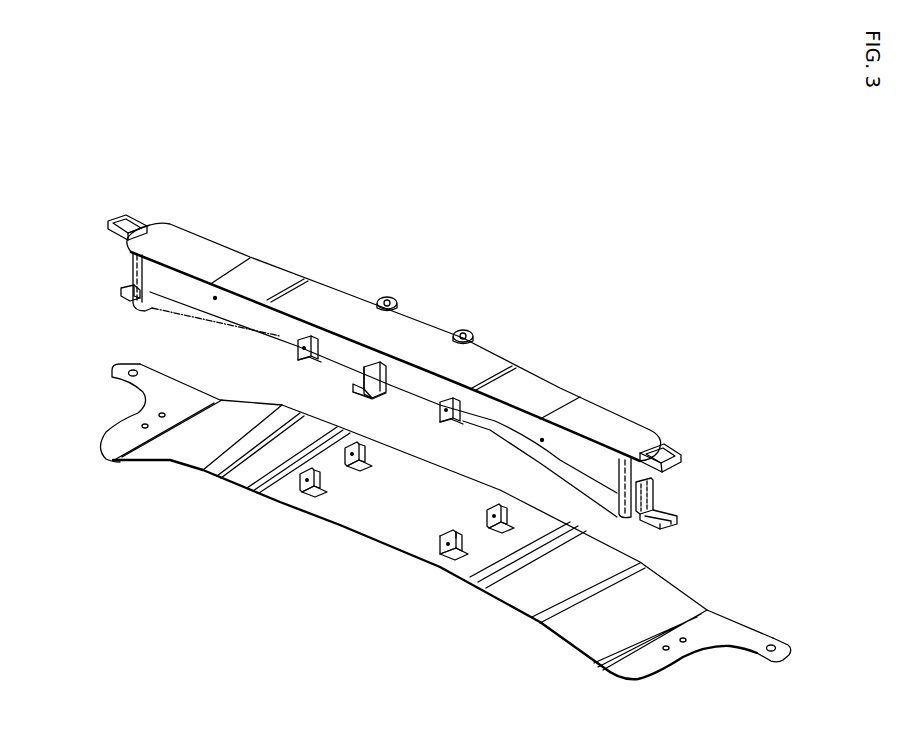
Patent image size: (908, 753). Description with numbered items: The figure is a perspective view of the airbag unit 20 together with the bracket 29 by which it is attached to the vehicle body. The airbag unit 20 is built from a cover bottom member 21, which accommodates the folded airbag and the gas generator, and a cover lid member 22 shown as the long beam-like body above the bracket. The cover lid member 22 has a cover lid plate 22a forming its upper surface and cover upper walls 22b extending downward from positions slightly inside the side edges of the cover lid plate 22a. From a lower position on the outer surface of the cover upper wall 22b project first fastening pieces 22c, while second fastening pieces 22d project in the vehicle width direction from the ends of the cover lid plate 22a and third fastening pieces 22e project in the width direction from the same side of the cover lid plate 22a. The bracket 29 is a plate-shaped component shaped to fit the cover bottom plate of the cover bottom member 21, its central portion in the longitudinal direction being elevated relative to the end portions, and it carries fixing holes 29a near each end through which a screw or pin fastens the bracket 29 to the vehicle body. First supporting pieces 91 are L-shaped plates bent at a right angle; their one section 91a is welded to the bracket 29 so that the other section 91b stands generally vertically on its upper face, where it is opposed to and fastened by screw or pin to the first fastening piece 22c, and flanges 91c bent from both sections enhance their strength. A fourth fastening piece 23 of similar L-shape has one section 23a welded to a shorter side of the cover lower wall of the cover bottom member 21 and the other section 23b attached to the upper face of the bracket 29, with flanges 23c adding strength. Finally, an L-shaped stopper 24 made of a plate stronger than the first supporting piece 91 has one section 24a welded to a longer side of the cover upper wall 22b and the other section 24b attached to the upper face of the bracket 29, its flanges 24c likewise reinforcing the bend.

The airbag unit 20 is at (466, 265).
The cover bottom member 21 is at (153, 300).
The cover lid member 22 is at (290, 270).
The cover lid plate 22a is at (541, 386).
The cover upper wall 22b is at (497, 422).
The first fastening piece 22c is at (297, 351).
The second fastening piece 22d is at (108, 228).
The third fastening piece 22e is at (395, 302).
The fourth fastening piece 23 is at (120, 292).
The one section of fourth fastening piece 23a is at (653, 492).
The other section of fourth fastening piece 23b is at (674, 525).
The flange of fourth fastening piece 23c is at (670, 512).
The stopper 24 is at (388, 365).
The one section of stopper 24a is at (360, 372).
The other section of stopper 24b is at (355, 390).
The flange of stopper 24c is at (357, 399).
The bracket 29 is at (366, 526).
The fixing hole 29a is at (130, 375).
The first supporting piece 91 is at (375, 453).
The one section of first supporting piece 91a is at (446, 558).
The other section of first supporting piece 91b is at (442, 546).
The flange of first supporting piece 91c is at (438, 538).